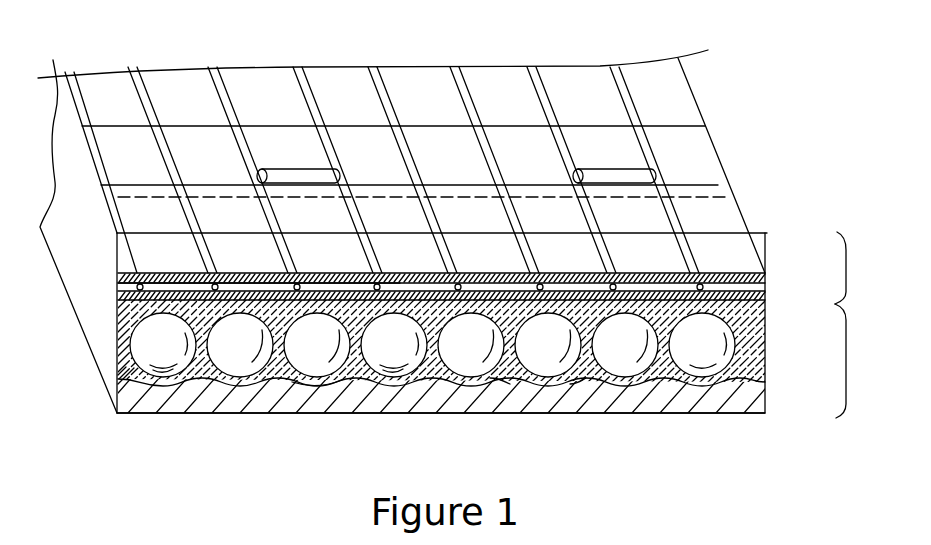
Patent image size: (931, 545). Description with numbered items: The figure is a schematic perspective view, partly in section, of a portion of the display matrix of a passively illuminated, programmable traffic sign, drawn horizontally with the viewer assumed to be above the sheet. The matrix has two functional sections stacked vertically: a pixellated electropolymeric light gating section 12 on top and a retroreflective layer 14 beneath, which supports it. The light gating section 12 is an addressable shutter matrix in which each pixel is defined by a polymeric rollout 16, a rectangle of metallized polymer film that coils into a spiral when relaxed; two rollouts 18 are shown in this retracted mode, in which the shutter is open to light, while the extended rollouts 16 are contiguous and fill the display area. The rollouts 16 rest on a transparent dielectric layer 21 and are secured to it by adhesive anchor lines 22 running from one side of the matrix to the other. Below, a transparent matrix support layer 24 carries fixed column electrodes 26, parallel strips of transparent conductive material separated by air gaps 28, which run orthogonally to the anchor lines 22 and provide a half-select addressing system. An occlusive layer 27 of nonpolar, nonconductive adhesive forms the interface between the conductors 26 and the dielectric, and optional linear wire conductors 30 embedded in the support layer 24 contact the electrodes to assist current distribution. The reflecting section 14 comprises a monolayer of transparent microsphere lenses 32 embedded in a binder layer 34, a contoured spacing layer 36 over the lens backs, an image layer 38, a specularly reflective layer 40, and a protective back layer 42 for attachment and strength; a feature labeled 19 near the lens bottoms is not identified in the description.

The pixellated electropolymeric light gating section 12 is at (861, 268).
The retroreflective layer 14 is at (862, 361).
The polymeric rollout 16 is at (131, 137).
The retracted rollout 18 is at (306, 168).
The ball interface 19 is at (315, 381).
The transparent dielectric layer 21 is at (763, 275).
The adhesive anchor line 22 is at (722, 192).
The transparent matrix support layer 24 is at (118, 283).
The fixed column electrode 26 is at (265, 83).
The occlusive layer 27 is at (763, 285).
The air gap 28 is at (138, 80).
The linear wire conductor 30 is at (238, 282).
The transparent microsphere lens 32 is at (151, 361).
The binder layer 34 is at (765, 318).
The spacing layer 36 is at (765, 363).
The image layer 38 is at (505, 384).
The specularly reflective layer 40 is at (625, 387).
The protective back layer 42 is at (765, 397).